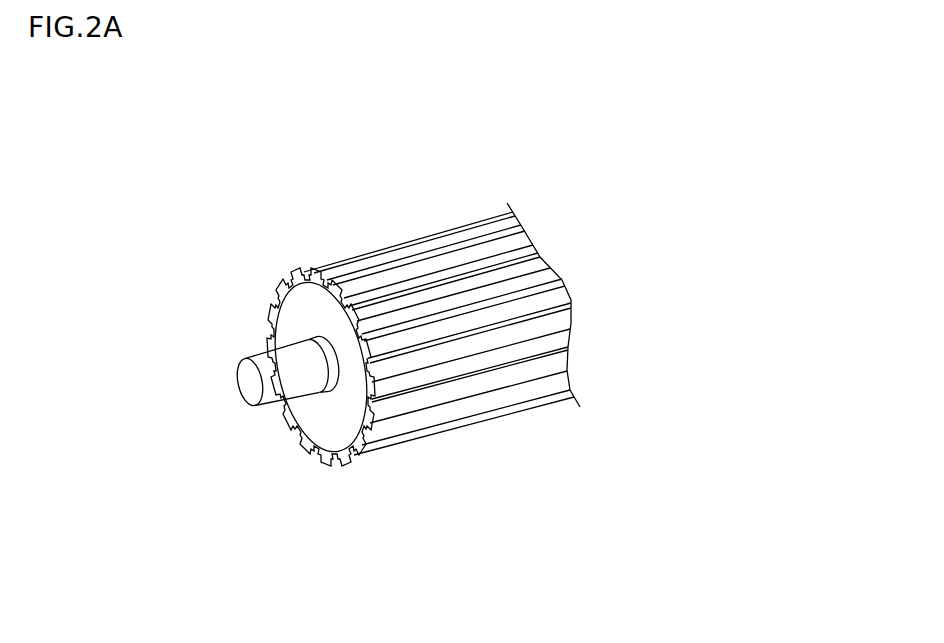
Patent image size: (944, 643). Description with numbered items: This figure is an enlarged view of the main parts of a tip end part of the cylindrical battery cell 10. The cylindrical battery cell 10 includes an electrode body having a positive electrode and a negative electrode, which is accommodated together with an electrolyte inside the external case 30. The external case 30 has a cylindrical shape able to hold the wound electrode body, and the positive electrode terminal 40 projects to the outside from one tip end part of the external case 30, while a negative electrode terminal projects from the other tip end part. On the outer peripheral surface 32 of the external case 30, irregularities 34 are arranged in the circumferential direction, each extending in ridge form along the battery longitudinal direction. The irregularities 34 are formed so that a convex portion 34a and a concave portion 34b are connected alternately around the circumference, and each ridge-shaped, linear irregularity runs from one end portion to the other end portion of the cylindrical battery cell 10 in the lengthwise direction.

The cylindrical battery cell 10 is at (492, 163).
The external case 30 is at (420, 316).
The outer peripheral surface 32 is at (420, 293).
The irregularities 34 is at (425, 157).
The convex portion 34a is at (372, 285).
The concave portion 34b is at (413, 300).
The positive electrode terminal 40 is at (249, 385).